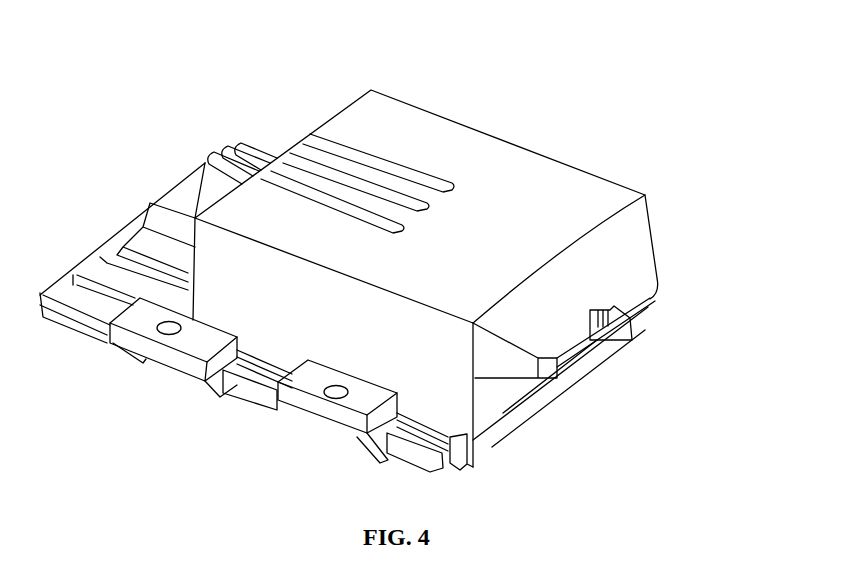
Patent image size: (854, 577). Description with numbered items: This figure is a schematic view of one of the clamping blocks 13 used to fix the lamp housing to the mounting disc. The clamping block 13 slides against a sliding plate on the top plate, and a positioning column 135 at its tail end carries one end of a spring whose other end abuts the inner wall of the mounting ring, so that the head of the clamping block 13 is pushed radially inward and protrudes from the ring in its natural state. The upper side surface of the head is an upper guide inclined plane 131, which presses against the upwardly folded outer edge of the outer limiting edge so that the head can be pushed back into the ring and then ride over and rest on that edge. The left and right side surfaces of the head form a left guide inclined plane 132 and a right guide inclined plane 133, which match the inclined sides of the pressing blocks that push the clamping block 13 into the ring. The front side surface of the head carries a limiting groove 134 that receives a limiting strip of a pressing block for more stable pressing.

The clamping block 13 is at (508, 170).
The upper guide inclined plane 131 is at (587, 278).
The left guide inclined plane 132 is at (653, 233).
The right guide inclined plane 133 is at (507, 363).
The limiting groove 134 is at (607, 333).
The positioning column 135 is at (222, 174).